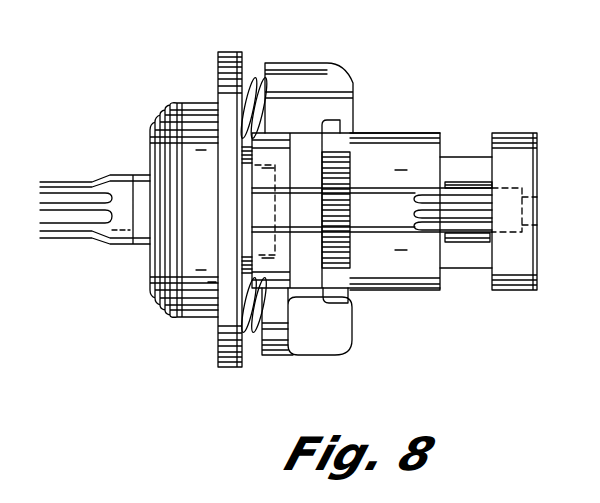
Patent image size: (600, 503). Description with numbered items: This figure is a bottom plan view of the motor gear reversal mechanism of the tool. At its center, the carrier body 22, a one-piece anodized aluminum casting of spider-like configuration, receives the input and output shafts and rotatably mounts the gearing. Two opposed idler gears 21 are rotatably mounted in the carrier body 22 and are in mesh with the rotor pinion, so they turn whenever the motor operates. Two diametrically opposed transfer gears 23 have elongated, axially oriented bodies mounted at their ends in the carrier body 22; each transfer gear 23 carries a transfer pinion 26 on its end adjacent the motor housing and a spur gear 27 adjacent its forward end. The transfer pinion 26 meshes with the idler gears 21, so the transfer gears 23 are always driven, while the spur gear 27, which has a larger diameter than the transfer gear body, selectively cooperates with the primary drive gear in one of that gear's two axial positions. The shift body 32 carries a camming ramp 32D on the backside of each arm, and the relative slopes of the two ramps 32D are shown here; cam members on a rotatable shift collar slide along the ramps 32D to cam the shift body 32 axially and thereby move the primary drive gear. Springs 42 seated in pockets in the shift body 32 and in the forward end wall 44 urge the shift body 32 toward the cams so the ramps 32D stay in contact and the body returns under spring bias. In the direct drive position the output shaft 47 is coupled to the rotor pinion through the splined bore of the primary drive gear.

The idler gears 21 is at (467, 182).
The carrier body 22 is at (425, 150).
The transfer gears 23 is at (387, 200).
The transfer pinion 26 is at (472, 220).
The spur gear 27 is at (337, 268).
The shift body 32 is at (283, 357).
The camming ramp 32D is at (355, 84).
The springs 42 is at (248, 87).
The forward end wall 44 is at (227, 368).
The output shaft 47 is at (138, 188).